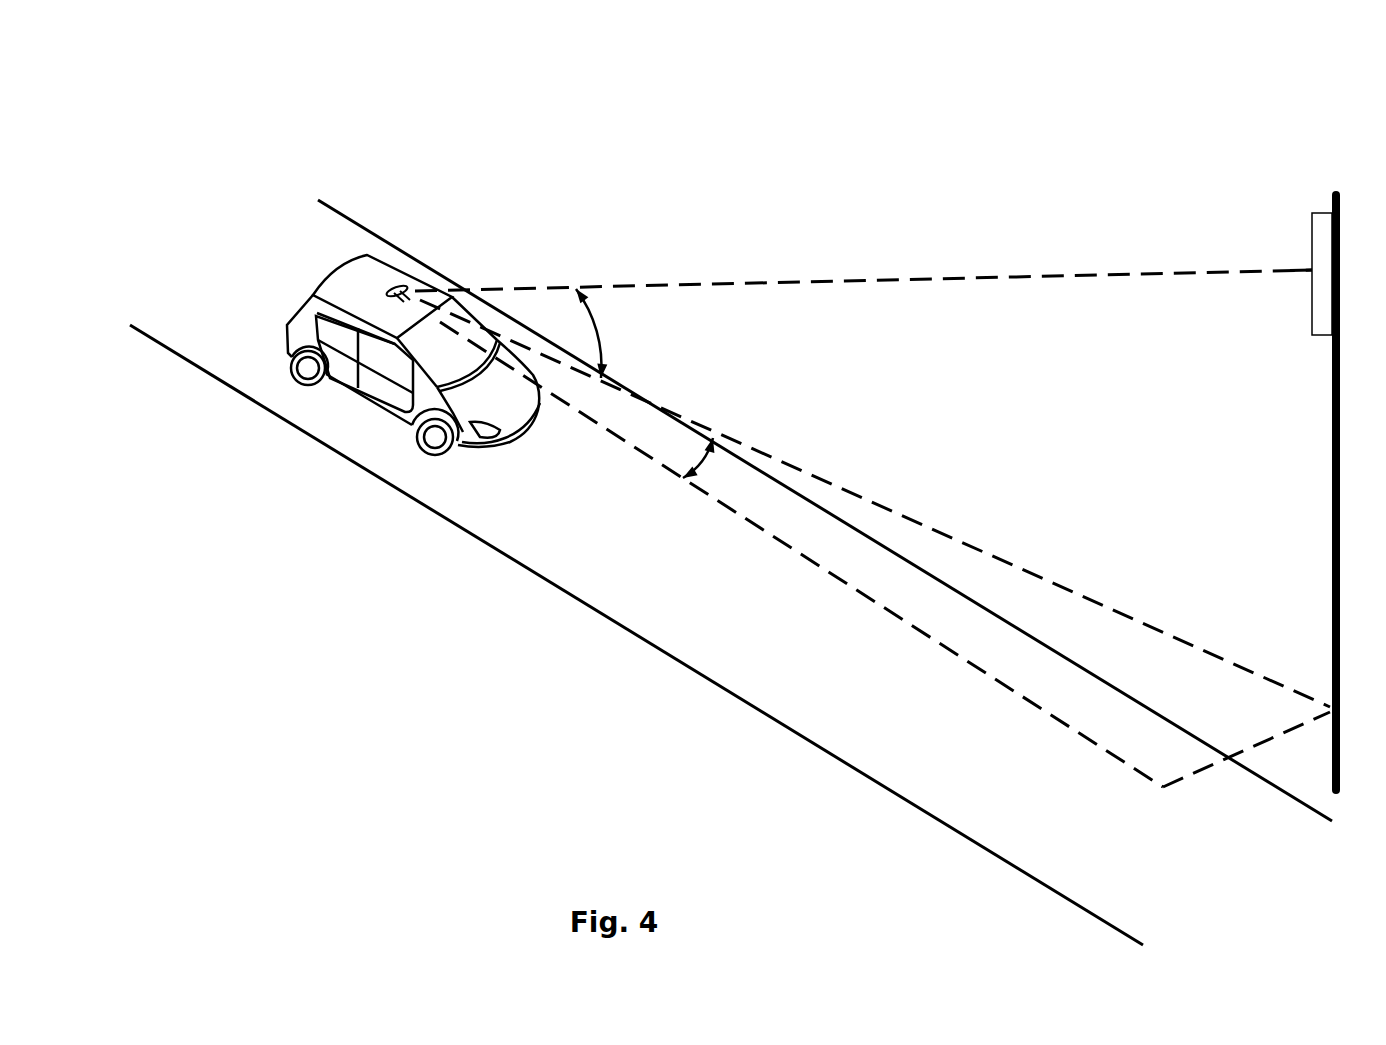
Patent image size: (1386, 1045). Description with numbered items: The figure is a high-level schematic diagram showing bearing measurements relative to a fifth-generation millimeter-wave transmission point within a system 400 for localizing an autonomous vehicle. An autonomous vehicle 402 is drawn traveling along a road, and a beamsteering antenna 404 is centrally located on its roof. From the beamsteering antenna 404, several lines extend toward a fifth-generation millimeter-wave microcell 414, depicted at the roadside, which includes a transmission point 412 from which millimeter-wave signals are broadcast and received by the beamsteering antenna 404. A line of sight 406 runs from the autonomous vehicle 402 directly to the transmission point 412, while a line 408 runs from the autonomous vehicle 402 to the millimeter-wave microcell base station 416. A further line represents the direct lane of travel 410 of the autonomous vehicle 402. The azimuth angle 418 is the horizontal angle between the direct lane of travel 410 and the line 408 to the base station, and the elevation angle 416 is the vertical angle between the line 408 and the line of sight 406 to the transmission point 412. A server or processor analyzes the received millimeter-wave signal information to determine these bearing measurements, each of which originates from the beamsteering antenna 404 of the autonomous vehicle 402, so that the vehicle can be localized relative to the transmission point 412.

The system for localizing an autonomous vehicle 400 is at (190, 87).
The autonomous vehicle 402 is at (511, 404).
The beamsteering antenna 404 is at (387, 291).
The line of sight 406 is at (708, 283).
The line from the autonomous vehicle to the 5G millimeter-wave microcell base statio 408 is at (809, 478).
The direct lane of travel 410 is at (802, 554).
The transmission point 412 is at (1310, 268).
The 5G millimeter-wave microcell 414 is at (1322, 212).
The elevation angle 416 is at (601, 330).
The azimuth angle 418 is at (703, 472).